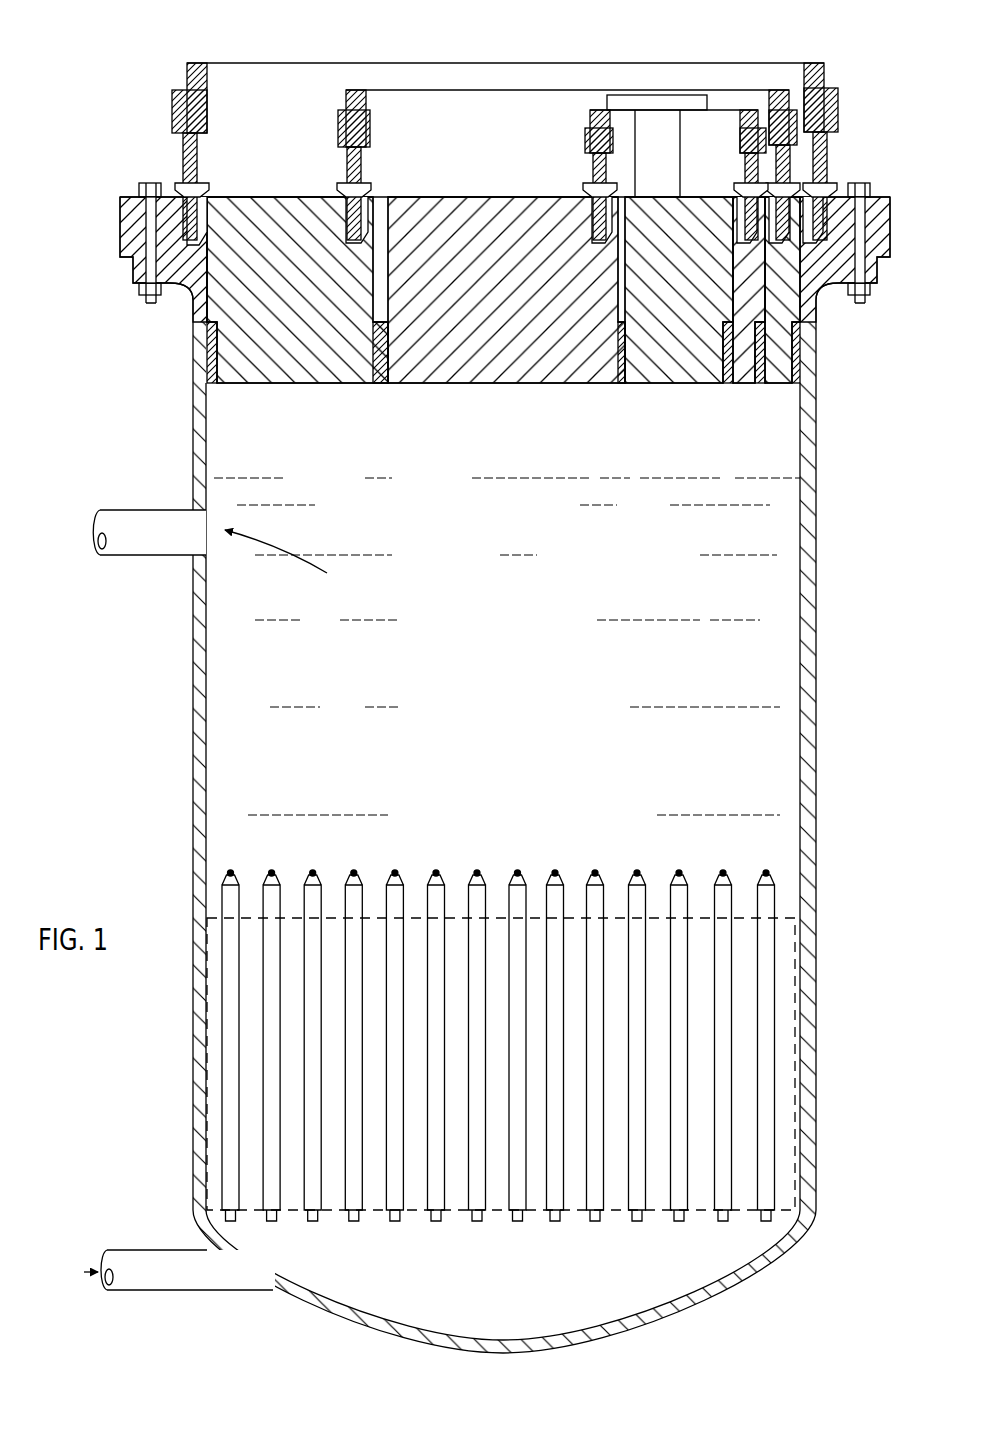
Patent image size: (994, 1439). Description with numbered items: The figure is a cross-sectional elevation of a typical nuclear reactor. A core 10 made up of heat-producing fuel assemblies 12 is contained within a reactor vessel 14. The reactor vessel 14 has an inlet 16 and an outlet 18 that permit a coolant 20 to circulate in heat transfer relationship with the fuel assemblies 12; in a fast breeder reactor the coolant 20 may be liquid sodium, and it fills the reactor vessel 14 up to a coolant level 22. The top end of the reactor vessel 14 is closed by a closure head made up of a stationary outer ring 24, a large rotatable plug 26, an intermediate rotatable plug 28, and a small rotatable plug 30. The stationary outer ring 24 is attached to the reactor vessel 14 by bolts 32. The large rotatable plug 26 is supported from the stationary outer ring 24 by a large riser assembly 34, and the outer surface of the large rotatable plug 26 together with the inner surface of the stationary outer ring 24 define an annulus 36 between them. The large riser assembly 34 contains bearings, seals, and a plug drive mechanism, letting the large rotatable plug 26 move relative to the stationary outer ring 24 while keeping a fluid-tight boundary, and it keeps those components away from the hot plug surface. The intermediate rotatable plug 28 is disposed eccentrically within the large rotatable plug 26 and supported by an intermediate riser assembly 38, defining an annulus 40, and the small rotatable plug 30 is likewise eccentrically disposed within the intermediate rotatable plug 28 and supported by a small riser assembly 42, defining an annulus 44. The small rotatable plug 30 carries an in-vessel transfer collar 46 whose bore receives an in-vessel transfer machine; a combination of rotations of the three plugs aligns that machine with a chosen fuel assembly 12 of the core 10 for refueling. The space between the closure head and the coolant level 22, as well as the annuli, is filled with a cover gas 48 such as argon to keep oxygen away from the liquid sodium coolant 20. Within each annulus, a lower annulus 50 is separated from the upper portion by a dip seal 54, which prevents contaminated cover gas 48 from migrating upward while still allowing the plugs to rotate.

The core 10 is at (510, 1230).
The fuel assemblies 12 is at (516, 870).
The reactor vessel 14 is at (192, 676).
The inlet 16 is at (143, 1250).
The outlet 18 is at (127, 516).
The coolant 20 is at (524, 677).
The coolant level 22 is at (723, 478).
The stationary outer ring 24 is at (130, 232).
The large rotatable plug 26 is at (301, 348).
The intermediate rotatable plug 28 is at (503, 311).
The small rotatable plug 30 is at (688, 302).
The bolts 32 is at (145, 185).
The large riser assembly 34 is at (182, 100).
The annulus 36 is at (214, 386).
The intermediate riser assembly 38 is at (361, 84).
The annulus 40 is at (392, 386).
The small riser assembly 42 is at (596, 130).
The annulus 44 is at (620, 385).
The in-vessel transfer collar 46 is at (658, 90).
The cover gas 48 is at (524, 455).
The lower annulus 50 is at (214, 298).
The dip seal 54 is at (212, 240).